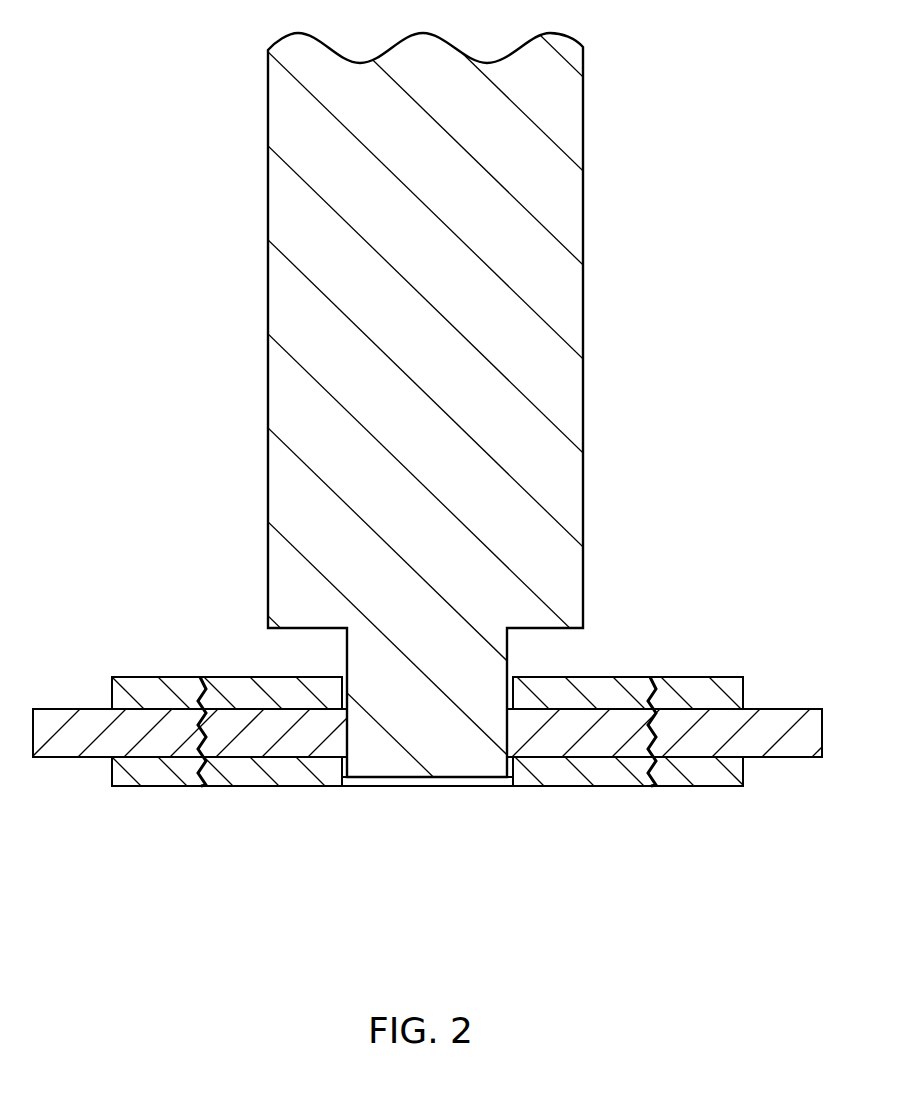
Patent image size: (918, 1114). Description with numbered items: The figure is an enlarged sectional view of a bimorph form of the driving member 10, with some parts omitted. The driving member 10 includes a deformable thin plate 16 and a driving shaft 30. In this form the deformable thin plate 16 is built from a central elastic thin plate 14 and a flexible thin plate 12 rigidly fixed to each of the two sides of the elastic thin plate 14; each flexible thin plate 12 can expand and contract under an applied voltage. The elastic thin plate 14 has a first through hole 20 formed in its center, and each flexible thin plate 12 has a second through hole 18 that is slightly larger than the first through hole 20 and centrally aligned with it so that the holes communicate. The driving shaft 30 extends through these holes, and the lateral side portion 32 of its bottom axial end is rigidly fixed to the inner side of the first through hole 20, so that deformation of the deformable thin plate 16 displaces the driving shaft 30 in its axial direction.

The driving member 10 is at (197, 100).
The flexible thin plate 12 is at (623, 772).
The elastic thin plate 14 is at (670, 737).
The deformable thin plate 16 is at (446, 808).
The second through hole 18 is at (532, 674).
The first through hole 20 is at (498, 780).
The driving shaft 30 is at (283, 472).
The lateral side portion 32 is at (338, 698).